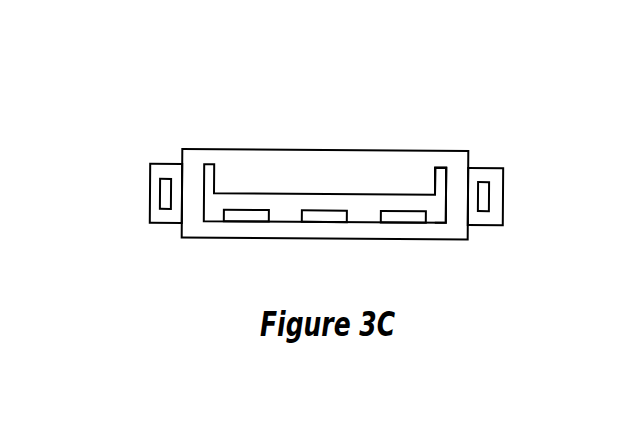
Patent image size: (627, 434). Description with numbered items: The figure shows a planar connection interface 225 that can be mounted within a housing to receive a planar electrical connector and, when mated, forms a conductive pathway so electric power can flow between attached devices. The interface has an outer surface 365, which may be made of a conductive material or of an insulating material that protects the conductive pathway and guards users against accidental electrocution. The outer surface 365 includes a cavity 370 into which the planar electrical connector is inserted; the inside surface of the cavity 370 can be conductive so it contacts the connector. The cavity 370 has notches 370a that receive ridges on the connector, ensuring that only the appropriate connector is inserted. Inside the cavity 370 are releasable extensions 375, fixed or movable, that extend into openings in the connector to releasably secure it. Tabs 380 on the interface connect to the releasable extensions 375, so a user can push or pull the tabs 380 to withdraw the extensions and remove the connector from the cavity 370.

The planar connection interface 225 is at (433, 120).
The outer surface 365 is at (222, 149).
The cavity 370 is at (438, 217).
The notch 370a is at (442, 180).
The releasable extension 375 is at (247, 216).
The tab 380 is at (150, 183).